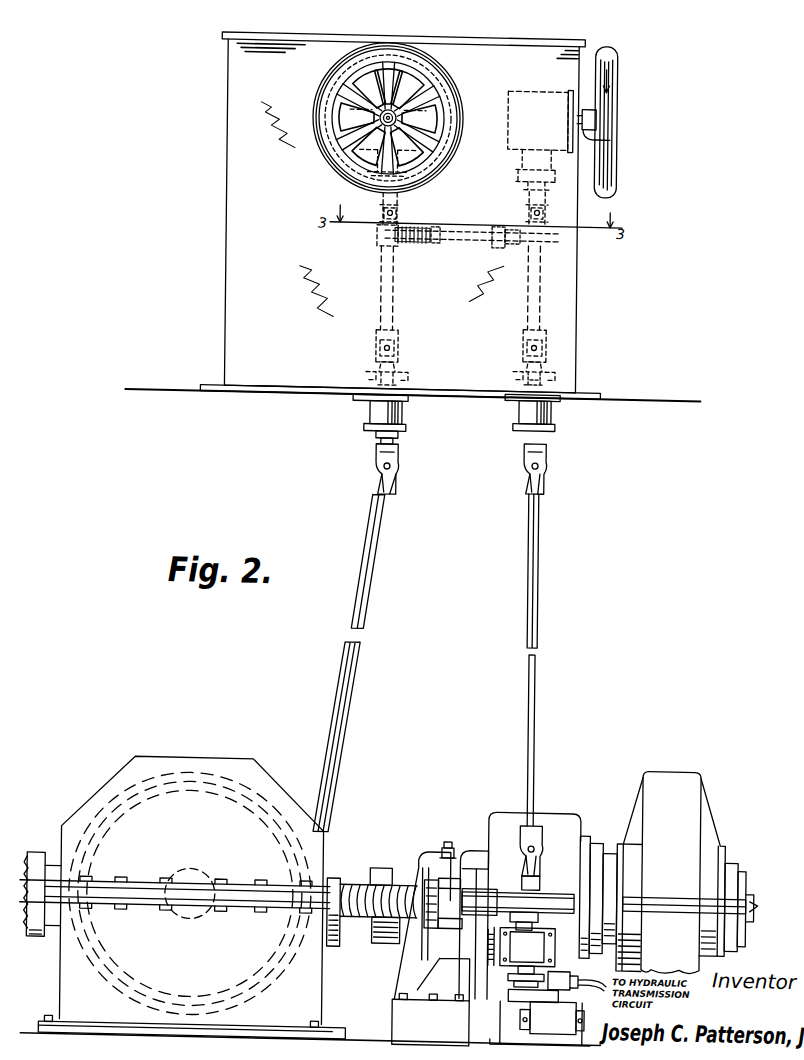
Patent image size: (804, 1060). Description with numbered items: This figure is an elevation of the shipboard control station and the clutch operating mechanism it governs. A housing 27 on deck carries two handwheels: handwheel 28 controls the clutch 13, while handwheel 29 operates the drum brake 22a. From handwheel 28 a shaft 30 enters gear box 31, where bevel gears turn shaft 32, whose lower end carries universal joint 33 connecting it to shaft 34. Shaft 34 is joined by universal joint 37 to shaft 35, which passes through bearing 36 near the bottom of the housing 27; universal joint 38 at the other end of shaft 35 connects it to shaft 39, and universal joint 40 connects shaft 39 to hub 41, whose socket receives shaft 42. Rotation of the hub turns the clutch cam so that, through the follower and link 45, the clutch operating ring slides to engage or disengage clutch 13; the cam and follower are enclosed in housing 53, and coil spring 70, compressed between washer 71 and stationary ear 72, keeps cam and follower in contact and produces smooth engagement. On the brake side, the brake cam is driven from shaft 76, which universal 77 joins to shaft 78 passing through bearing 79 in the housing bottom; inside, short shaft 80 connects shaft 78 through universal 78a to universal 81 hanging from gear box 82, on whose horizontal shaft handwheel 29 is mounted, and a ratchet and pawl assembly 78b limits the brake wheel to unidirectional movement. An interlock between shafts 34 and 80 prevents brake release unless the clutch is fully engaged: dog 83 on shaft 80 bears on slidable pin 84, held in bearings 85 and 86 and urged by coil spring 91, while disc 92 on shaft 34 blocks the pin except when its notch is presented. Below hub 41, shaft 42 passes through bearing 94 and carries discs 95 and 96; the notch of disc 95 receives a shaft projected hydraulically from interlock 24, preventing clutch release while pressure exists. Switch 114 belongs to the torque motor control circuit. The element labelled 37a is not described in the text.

The clutch 13 is at (552, 811).
The drum brake 22a is at (235, 775).
The interlock 24 is at (558, 978).
The housing 27 is at (224, 220).
The handwheel 28 is at (617, 104).
The handwheel 29 is at (428, 52).
The shaft 30 is at (596, 128).
The gear box 31 is at (540, 92).
The shaft 32 is at (525, 190).
The universal joint 33 is at (530, 208).
The shaft 34 is at (542, 292).
The shaft 35 is at (546, 388).
The bearing 36 is at (552, 413).
The universal joint 37 is at (546, 355).
The joint yoke 37a is at (544, 372).
The universal joint 38 is at (545, 468).
The shaft 39 is at (537, 610).
The universal joint 40 is at (540, 862).
The hub 41 is at (538, 893).
The shaft 42 is at (512, 917).
The link 45 is at (447, 848).
The housing 53 is at (498, 888).
The coil spring 70 is at (355, 885).
The washer 71 is at (338, 880).
The ear 72 is at (420, 856).
The shaft 76 is at (370, 572).
The universal 77 is at (394, 454).
The shaft 78 is at (399, 435).
The universal 78a is at (395, 362).
The ratchet and pawl assembly 78b is at (404, 376).
The bearing 79 is at (370, 411).
The short shaft 80 is at (393, 292).
The universal 81 is at (396, 207).
The gear box 82 is at (340, 118).
The dog 83 is at (378, 244).
The pin 84 is at (466, 242).
The bearing 85 is at (496, 248).
The bearing 86 is at (436, 244).
The coil spring 91 is at (418, 243).
The disc 92 is at (514, 246).
The bearing 94 is at (512, 948).
The disc 95 is at (510, 980).
The disc 96 is at (516, 1002).
The switch 114 is at (552, 1017).